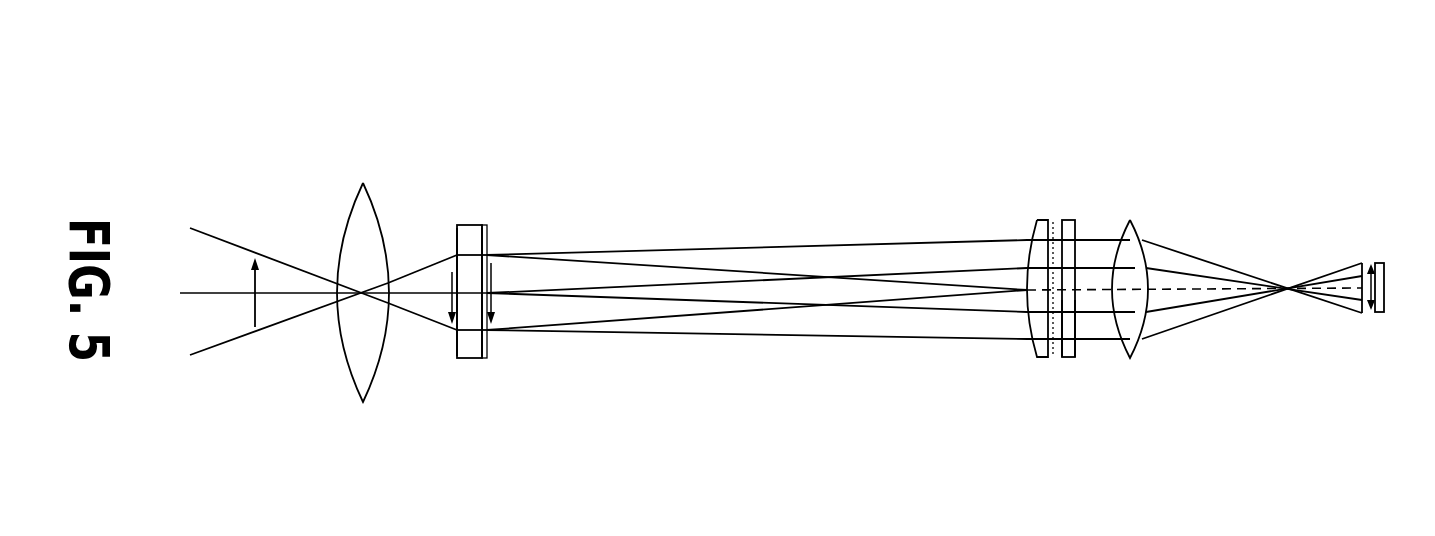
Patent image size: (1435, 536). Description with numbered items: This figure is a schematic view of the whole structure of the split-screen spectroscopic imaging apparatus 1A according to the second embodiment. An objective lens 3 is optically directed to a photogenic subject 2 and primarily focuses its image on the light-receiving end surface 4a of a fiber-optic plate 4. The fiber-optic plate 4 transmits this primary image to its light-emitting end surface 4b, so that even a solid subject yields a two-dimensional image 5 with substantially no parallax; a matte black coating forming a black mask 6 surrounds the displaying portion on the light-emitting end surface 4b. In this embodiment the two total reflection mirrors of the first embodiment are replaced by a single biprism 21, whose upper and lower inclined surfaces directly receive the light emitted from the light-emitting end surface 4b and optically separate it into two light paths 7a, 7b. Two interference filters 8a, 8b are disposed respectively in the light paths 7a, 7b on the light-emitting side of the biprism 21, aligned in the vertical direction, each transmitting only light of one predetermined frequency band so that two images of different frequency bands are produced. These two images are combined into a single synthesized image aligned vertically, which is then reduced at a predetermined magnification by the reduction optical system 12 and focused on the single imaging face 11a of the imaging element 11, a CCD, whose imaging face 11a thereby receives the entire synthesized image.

The split-screen spectroscopic imaging apparatus 1A is at (803, 86).
The photogenic subject 2 is at (258, 286).
The objective lens 3 is at (362, 212).
The fiber-optic plate 4 is at (467, 216).
The light-receiving end surface 4a is at (458, 346).
The light-emitting end surface 4b is at (488, 345).
The two-dimensional image 5 is at (492, 279).
The black mask 6 is at (487, 237).
The light path 7a is at (815, 257).
The light path 7b is at (817, 322).
The biprism 21 is at (1035, 232).
The interference filter 8a is at (1068, 232).
The interference filter 8b is at (1068, 352).
The reduction optical system 12 is at (1135, 232).
The imaging element 11 is at (1382, 262).
The imaging face 11a is at (1372, 312).